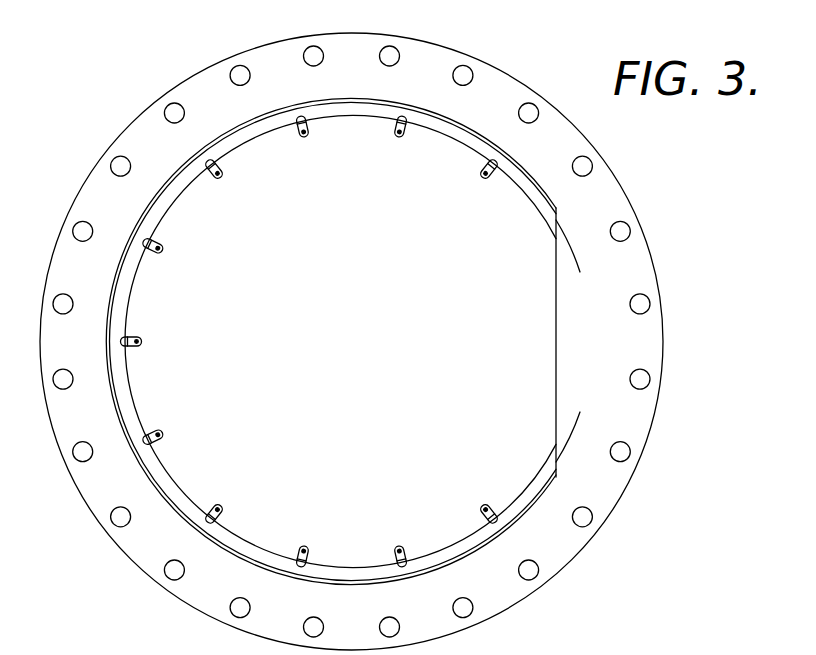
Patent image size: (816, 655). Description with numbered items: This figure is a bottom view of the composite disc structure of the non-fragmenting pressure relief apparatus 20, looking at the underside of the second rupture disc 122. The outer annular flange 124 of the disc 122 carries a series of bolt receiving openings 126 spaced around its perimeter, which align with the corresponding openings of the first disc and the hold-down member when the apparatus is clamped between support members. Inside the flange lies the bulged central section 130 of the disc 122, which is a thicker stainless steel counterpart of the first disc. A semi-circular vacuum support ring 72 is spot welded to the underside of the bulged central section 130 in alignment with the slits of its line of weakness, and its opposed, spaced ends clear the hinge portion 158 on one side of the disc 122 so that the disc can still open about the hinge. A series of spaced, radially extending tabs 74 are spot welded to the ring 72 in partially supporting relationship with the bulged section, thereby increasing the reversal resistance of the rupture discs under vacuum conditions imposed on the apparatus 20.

The pressure relief apparatus 20 is at (80, 147).
The second rupture disc 122 is at (612, 168).
The flange 124 is at (638, 268).
The bolt receiving openings 126 is at (635, 380).
The semi-circular vacuum support ring 72 is at (244, 548).
The tabs 74 is at (213, 182).
The hinge portion 158 is at (573, 333).
The central section 130 is at (352, 342).